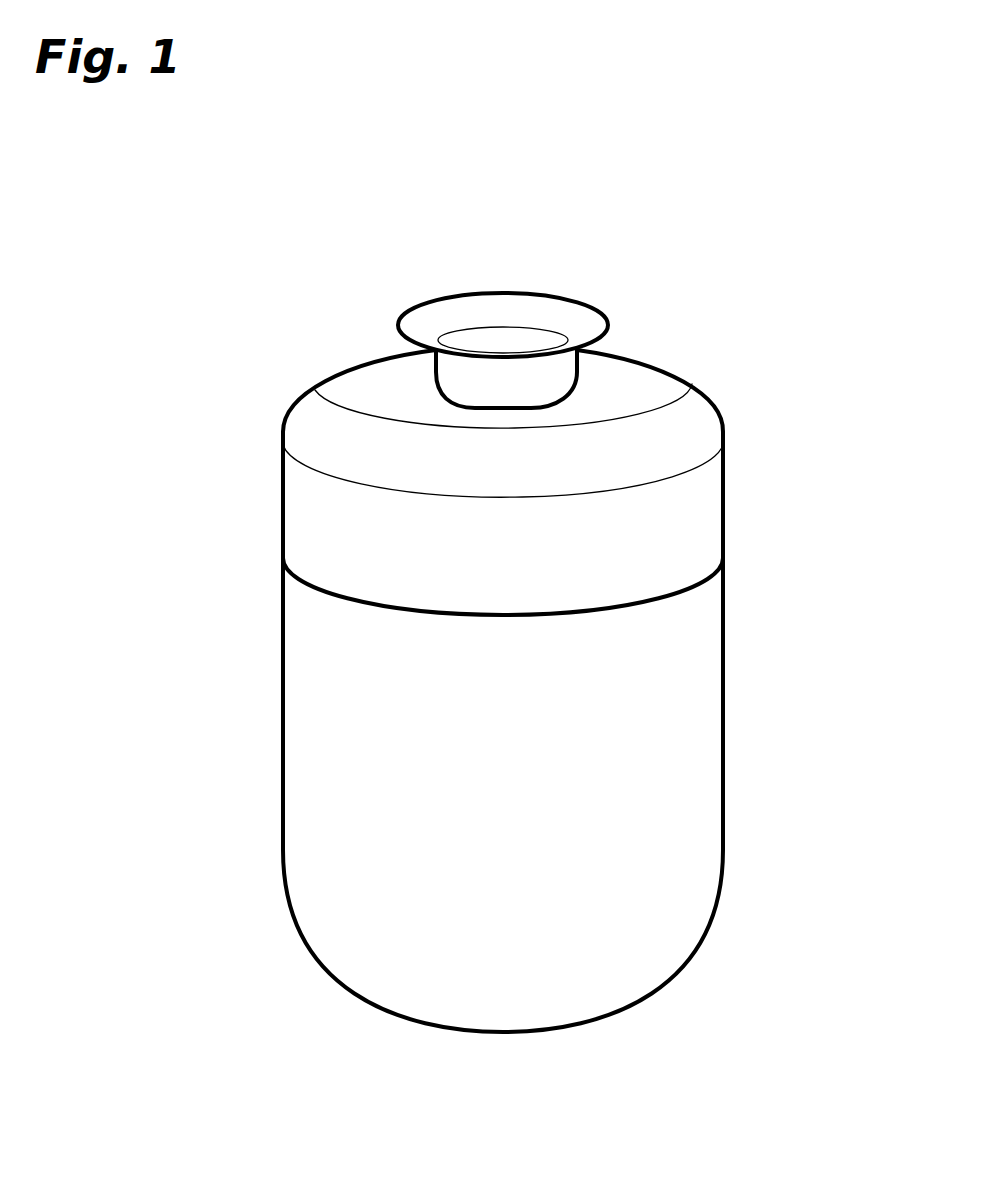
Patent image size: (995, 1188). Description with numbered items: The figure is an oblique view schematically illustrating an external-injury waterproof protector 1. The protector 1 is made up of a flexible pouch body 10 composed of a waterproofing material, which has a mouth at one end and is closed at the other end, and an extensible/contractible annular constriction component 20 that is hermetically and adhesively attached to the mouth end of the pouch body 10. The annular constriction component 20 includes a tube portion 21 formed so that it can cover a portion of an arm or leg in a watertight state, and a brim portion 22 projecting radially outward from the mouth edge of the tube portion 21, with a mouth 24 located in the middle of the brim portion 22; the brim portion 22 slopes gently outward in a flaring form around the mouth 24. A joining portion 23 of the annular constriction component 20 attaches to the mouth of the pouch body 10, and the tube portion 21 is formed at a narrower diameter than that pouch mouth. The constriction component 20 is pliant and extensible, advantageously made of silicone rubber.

The external-injury waterproof protector 1 is at (707, 233).
The pouch body 10 is at (695, 765).
The annular constriction component 20 is at (740, 558).
The tube portion 21 is at (463, 368).
The brim portion 22 is at (438, 327).
The joining portion 23 is at (312, 528).
The mouth 24 is at (507, 338).